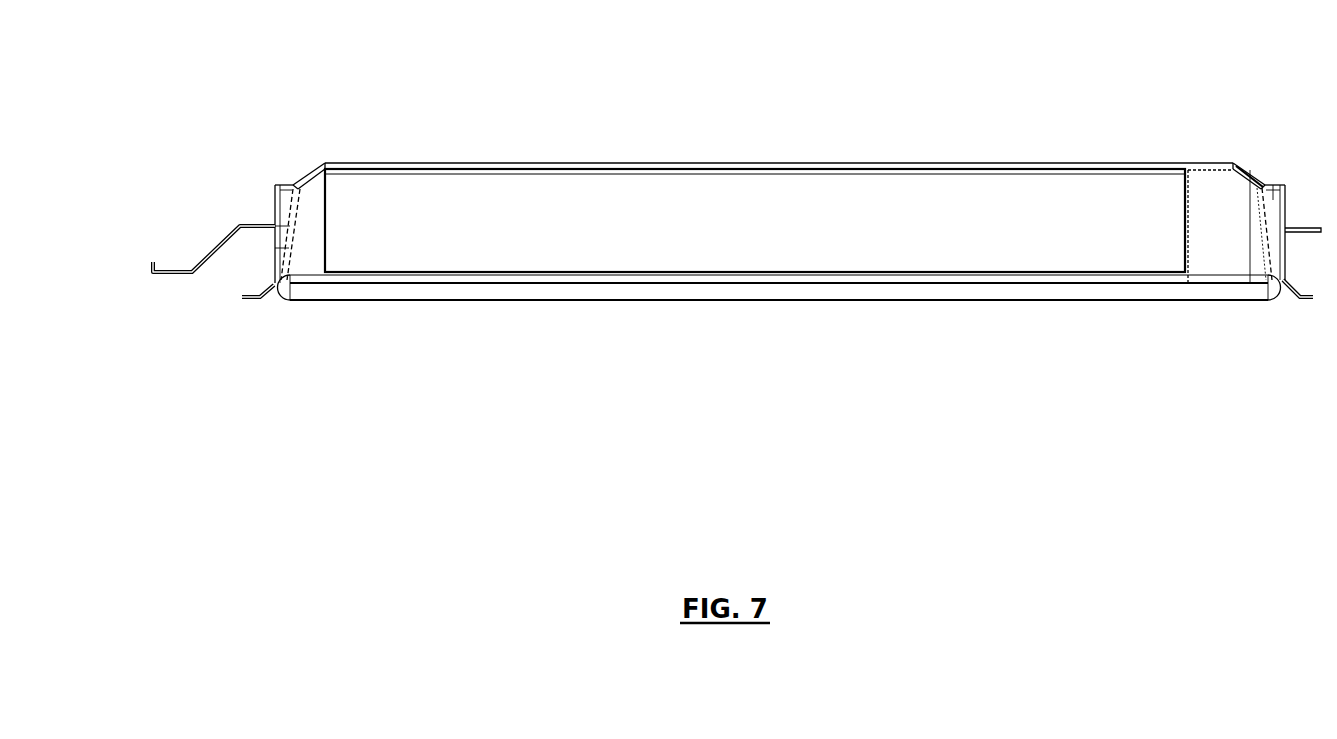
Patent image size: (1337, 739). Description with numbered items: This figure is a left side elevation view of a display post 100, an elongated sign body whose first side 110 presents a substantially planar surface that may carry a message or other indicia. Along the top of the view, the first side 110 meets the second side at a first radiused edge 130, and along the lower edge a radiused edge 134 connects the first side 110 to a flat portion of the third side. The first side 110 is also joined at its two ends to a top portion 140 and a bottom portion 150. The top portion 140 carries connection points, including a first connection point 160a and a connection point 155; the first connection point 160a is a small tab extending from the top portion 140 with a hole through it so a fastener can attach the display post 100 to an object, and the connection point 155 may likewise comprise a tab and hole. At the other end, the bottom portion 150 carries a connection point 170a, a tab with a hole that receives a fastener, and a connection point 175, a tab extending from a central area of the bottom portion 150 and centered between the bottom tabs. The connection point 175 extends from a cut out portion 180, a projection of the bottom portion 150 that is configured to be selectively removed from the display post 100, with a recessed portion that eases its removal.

The display post 100 is at (737, 317).
The first side 110 is at (693, 247).
The first radiused edge 130 is at (563, 163).
The radiused edge 134 is at (490, 292).
The top portion 140 is at (293, 186).
The bottom portion 150 is at (1262, 183).
The connection point 155 is at (180, 273).
The first connection point 160a is at (247, 298).
The connection point 170a is at (1303, 297).
The connection point 175 is at (1320, 228).
The cut out portion 180 is at (1275, 183).